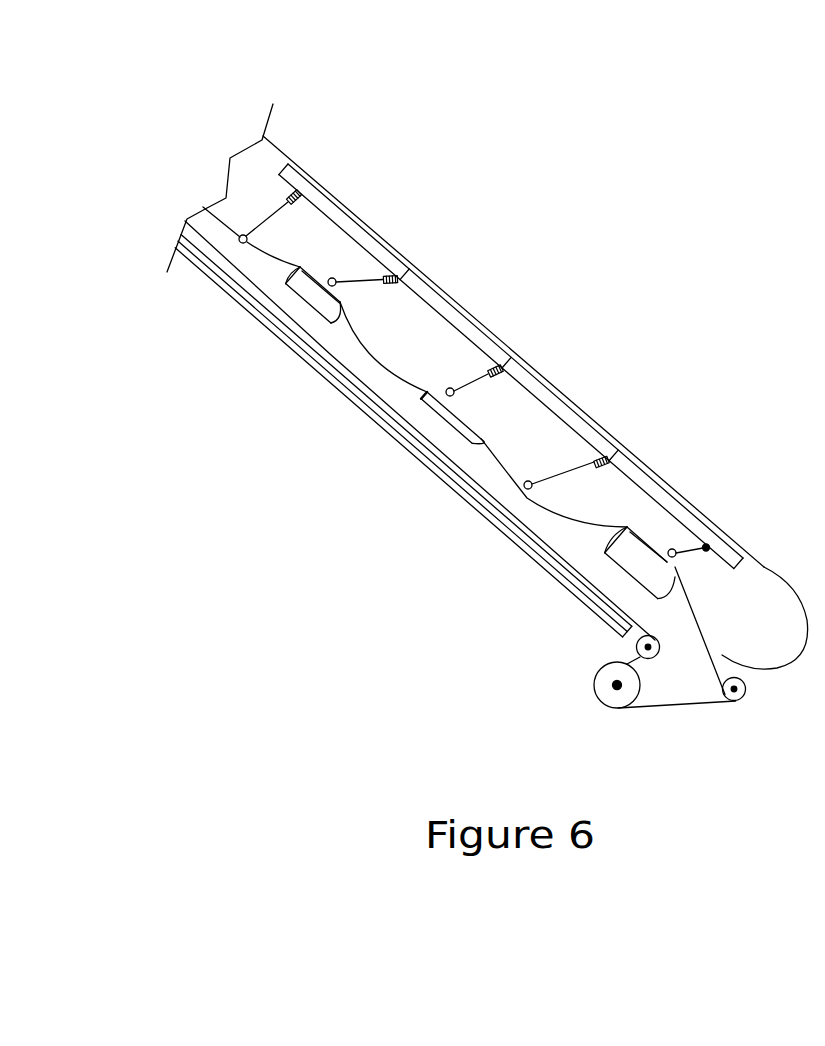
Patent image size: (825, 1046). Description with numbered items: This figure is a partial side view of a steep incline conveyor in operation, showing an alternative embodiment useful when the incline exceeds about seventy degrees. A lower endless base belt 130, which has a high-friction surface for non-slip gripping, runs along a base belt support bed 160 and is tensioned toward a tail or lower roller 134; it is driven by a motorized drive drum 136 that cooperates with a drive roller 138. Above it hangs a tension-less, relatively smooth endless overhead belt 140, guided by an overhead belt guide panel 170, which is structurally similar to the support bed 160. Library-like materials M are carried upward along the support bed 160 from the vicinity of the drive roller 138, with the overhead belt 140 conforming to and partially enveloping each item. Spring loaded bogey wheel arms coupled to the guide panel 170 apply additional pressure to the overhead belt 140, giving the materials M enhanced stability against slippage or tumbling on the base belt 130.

The endless base belt 130 is at (683, 710).
The tail or lower roller 134 is at (748, 690).
The motorized drive drum 136 is at (596, 680).
The drive roller 138 is at (637, 647).
The endless overhead belt 140 is at (763, 563).
The base belt support bed 160 is at (465, 378).
The overhead belt guide panel 170 is at (297, 165).
The materials M is at (313, 294).